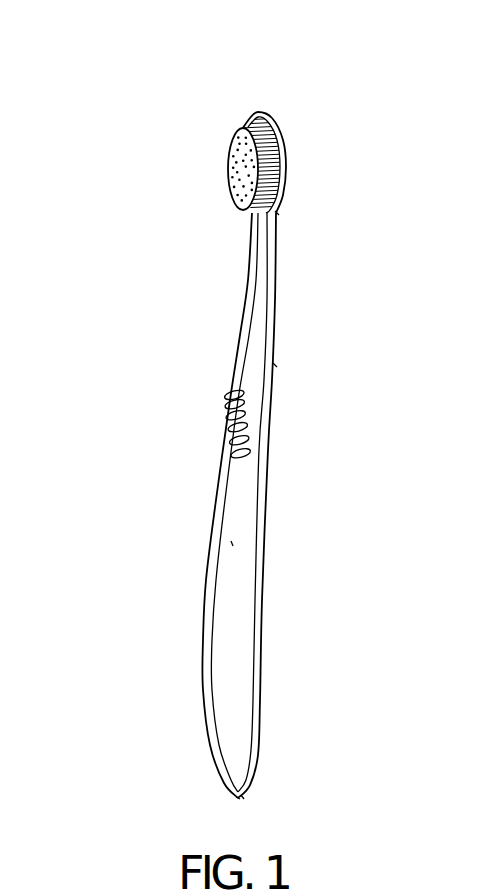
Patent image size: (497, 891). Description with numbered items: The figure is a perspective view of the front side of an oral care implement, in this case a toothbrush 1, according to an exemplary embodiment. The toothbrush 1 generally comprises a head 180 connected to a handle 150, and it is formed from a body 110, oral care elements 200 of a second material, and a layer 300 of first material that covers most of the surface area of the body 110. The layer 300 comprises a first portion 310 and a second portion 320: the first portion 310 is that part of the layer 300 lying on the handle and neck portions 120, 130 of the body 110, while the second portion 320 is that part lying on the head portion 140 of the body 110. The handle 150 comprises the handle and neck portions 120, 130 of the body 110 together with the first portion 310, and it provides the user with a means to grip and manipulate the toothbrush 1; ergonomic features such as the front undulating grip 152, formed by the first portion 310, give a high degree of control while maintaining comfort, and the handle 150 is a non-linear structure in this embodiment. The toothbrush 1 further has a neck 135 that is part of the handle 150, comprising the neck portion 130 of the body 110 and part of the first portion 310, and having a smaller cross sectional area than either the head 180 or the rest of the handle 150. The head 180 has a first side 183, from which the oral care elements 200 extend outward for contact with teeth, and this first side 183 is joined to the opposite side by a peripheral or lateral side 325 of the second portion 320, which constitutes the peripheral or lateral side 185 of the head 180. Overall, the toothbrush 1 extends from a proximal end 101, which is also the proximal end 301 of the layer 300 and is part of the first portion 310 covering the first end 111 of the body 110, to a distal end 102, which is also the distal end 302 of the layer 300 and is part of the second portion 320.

The toothbrush 1 is at (115, 240).
The oral care elements 200 is at (240, 127).
The distal end 102 is at (314, 89).
The distal end of the layer of first material 302 is at (260, 111).
The peripheral or lateral side of the head 185 is at (281, 134).
The head 180 is at (308, 139).
The peripheral or lateral side of the second portion 325 is at (280, 167).
The second portion of the layer of first material 320 is at (282, 187).
The head portion of the body 140 is at (277, 213).
The first side of the head 183 is at (208, 182).
The neck portion of the body 130 is at (262, 280).
The neck 135 is at (300, 262).
The layer of first material 300 is at (268, 338).
The body 110 is at (275, 365).
The front undulating grip 152 is at (228, 421).
The handle 150 is at (311, 466).
The handle portion of the body 120 is at (232, 544).
The first portion of the layer of first material 310 is at (258, 580).
The first end of the body 111 is at (243, 797).
The proximal end 101 is at (304, 803).
The proximal end of the layer of first material 301 is at (238, 798).